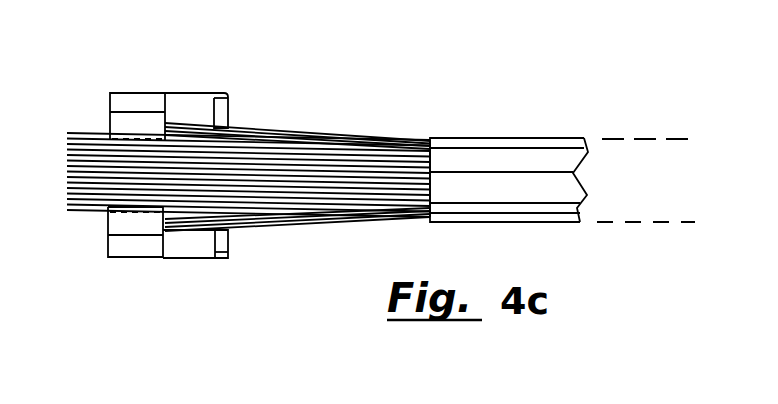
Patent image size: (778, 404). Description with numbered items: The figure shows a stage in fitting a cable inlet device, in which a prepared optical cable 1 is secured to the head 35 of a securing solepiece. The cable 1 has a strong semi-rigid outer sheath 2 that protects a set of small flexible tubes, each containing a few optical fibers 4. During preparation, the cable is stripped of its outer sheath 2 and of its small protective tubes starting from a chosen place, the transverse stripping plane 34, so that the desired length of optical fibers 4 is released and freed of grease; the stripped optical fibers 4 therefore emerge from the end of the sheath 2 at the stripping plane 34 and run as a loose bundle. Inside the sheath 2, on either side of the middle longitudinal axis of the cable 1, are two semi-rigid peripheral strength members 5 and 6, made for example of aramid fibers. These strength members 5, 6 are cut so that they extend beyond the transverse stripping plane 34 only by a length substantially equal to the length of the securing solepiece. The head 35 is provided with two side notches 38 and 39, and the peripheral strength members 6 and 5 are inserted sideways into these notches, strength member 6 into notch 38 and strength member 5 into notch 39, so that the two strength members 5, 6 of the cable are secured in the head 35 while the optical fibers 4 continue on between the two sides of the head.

The cable 1 is at (538, 128).
The outer sheath 2 is at (570, 153).
The optical fibers 4 is at (87, 172).
The peripheral strength member 5 is at (302, 217).
The peripheral strength member 6 is at (302, 145).
The transverse stripping plane 34 is at (428, 172).
The head of the securing solepiece 35 is at (142, 81).
The side notch 38 is at (147, 121).
The side notch 39 is at (132, 247).